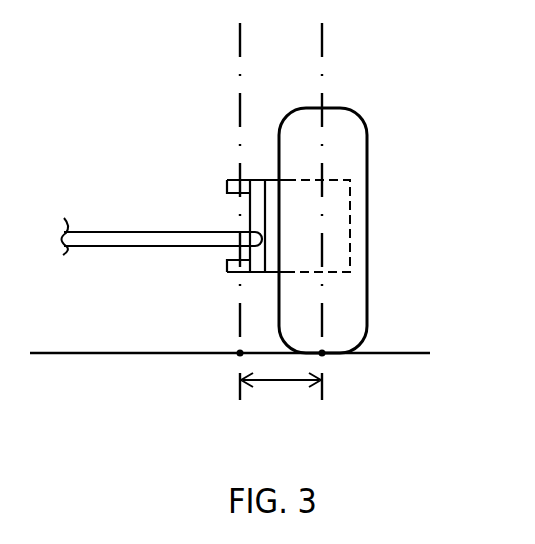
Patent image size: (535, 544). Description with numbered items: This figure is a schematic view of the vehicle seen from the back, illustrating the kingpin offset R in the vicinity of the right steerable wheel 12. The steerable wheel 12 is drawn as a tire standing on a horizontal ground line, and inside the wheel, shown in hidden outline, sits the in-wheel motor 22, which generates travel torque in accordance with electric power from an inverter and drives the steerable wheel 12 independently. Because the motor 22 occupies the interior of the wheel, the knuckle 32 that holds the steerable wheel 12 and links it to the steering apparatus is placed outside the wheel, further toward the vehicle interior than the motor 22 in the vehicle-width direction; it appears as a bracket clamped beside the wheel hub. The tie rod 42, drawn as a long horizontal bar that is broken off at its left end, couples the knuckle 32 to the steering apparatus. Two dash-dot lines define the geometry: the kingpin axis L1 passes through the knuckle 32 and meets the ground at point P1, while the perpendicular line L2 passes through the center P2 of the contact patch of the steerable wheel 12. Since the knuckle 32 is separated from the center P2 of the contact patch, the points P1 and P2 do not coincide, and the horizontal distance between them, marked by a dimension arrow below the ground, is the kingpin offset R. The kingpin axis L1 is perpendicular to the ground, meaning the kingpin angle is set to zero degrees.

The right steerable wheel 12 is at (356, 108).
The right motor 22 is at (351, 228).
The knuckle 32 is at (227, 273).
The tie rod 42 is at (128, 247).
The kingpin axis L1 is at (237, 97).
The perpendicular line L2 is at (324, 31).
The point where the kingpin axis intersects the ground P1 is at (239, 356).
The center of the contact patch P2 is at (324, 356).
The kingpin offset R is at (281, 394).